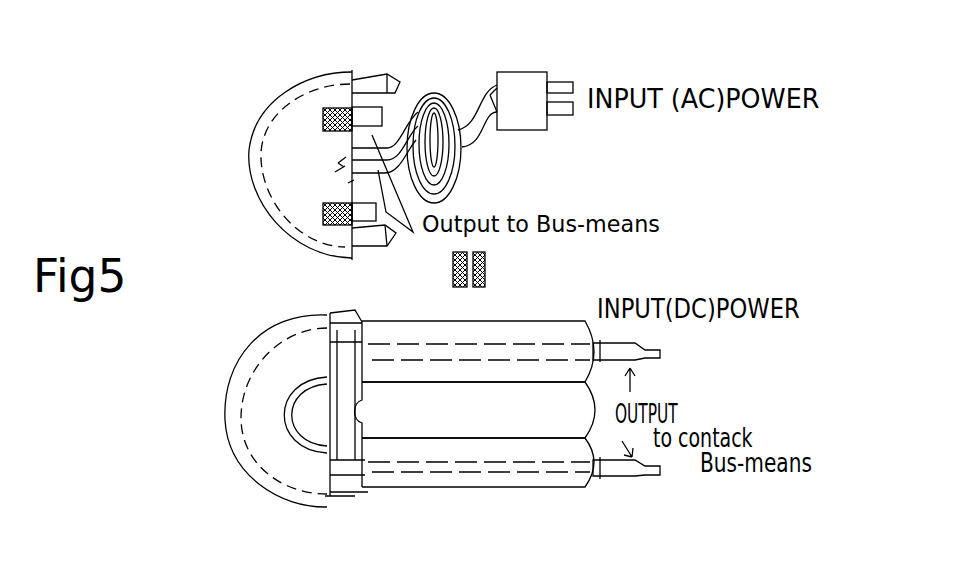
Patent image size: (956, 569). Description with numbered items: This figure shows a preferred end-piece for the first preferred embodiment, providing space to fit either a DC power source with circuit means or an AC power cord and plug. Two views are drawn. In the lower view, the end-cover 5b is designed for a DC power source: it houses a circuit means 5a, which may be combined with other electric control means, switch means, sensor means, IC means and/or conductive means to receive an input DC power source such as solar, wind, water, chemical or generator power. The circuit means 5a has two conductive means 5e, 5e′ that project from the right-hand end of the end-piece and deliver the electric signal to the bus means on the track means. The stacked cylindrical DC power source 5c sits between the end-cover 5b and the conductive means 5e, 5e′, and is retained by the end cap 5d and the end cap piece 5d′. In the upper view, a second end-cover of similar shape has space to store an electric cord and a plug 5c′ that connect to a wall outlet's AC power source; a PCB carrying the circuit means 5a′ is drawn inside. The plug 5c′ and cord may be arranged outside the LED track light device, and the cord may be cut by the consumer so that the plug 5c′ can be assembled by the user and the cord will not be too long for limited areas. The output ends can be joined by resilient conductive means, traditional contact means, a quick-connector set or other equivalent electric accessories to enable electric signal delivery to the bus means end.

The circuit means 5a is at (268, 377).
The PCB circuit means 5a′ is at (290, 137).
The end-cover 5b is at (257, 140).
The battery cells 5c is at (518, 458).
The plug 5c′ is at (518, 103).
The end cap 5d is at (343, 320).
The end cap wedge 5d′ is at (445, 63).
The conductive means 5e is at (663, 352).
The conductive means 5e′ is at (653, 477).